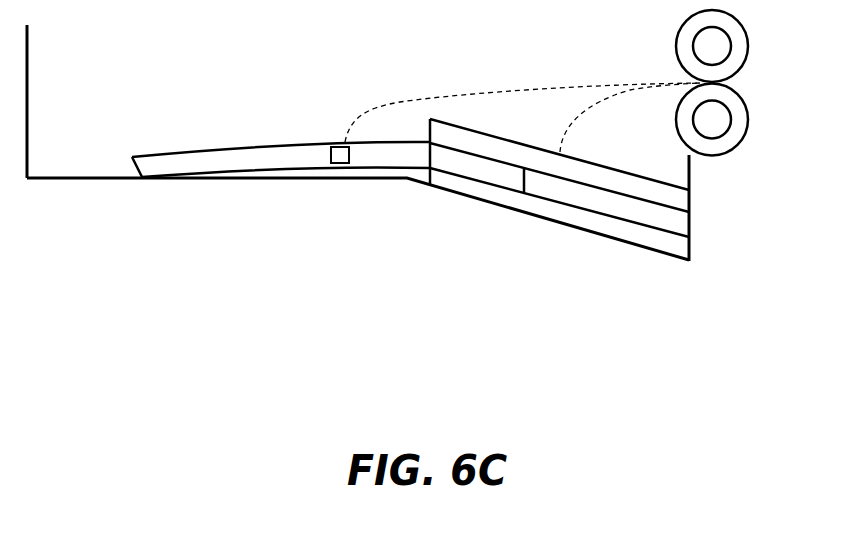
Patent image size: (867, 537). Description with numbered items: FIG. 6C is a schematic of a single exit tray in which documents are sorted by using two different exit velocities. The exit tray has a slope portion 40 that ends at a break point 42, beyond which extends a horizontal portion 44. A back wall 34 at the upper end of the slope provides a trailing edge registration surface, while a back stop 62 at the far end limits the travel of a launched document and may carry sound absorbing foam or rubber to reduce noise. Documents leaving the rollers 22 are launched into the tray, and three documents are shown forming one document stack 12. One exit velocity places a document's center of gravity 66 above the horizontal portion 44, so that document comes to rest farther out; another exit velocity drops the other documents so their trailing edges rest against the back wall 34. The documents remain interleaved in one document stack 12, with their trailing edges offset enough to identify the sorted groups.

The document stack 12 is at (321, 73).
The feed rollers 22 is at (750, 49).
The back wall 34 is at (691, 227).
The slope portion 40 is at (547, 223).
The break point 42 is at (405, 180).
The horizontal portion 44 is at (78, 180).
The back stop 62 is at (29, 81).
The center of gravity 66 is at (340, 163).